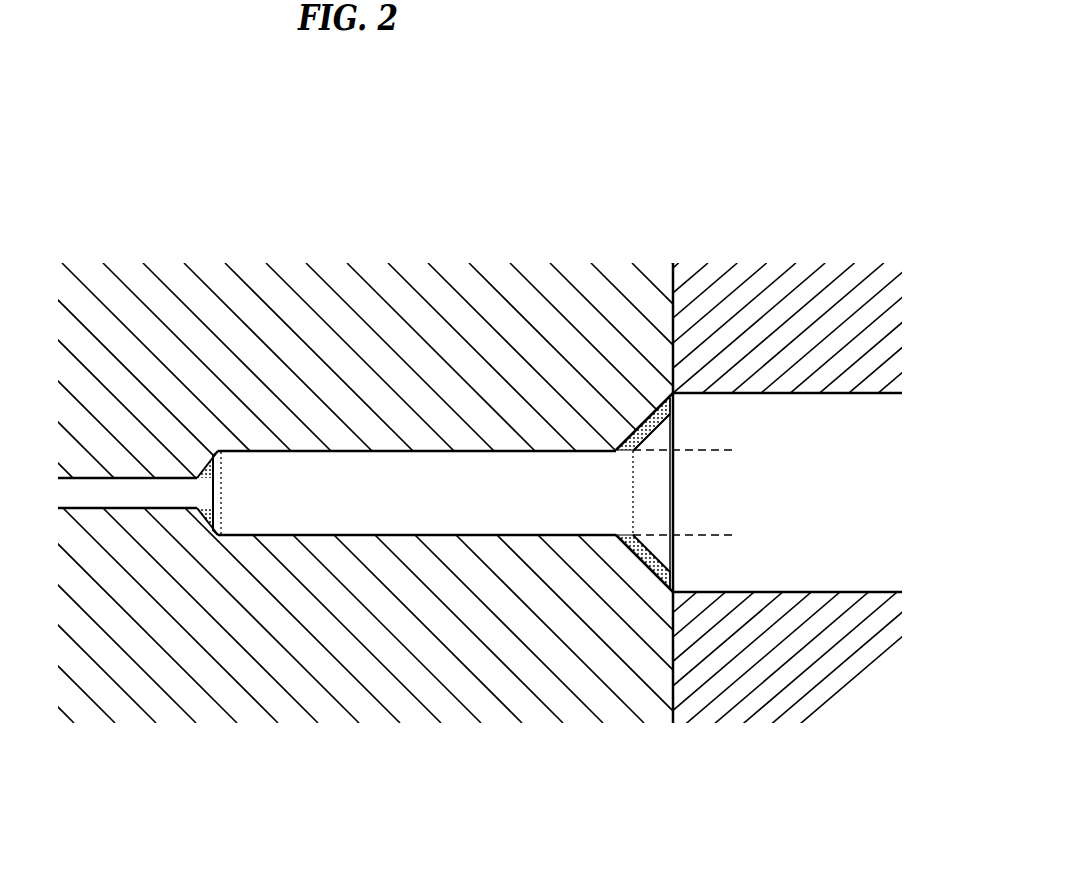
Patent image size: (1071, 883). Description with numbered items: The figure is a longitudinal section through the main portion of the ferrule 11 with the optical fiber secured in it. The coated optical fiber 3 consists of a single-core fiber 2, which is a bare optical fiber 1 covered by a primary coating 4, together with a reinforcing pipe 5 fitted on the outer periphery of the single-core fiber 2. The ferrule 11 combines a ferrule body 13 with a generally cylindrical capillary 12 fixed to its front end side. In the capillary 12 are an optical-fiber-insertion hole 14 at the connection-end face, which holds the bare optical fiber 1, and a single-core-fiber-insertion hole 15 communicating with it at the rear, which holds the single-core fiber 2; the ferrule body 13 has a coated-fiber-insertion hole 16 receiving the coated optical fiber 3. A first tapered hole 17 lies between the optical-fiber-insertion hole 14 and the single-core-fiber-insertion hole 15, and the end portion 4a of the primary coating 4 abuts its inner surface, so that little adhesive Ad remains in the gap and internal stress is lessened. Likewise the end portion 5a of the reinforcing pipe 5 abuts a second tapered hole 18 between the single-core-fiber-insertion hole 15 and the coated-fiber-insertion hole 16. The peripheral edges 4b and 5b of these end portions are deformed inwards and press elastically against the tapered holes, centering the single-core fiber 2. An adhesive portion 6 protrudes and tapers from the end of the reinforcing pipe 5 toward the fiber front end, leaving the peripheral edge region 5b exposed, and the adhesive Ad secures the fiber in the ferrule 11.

The bare optical fiber 1 is at (112, 492).
The single-core fiber 2 is at (483, 460).
The coated optical fiber 3 is at (832, 405).
The primary coating 4 is at (415, 450).
The end portion of the primary coating 4a is at (215, 507).
The peripheral edge of the end portion of the primary coating 4b is at (218, 453).
The reinforcing pipe 5 is at (737, 593).
The end portion of the reinforcing pipe 5a is at (670, 513).
The peripheral edge region of the end surface portion of the reinforcing pipe 5b is at (673, 593).
The adhesive portion 6 is at (653, 443).
The ferrule 11 is at (622, 162).
The capillary 12 is at (622, 282).
The ferrule body 13 is at (733, 277).
The optical-fiber-insertion hole 14 is at (73, 507).
The single-core-fiber-insertion hole 15 is at (427, 535).
The coated-fiber-insertion hole 16 is at (762, 593).
The first tapered hole 17 is at (212, 524).
The second tapered hole 18 is at (665, 419).
The adhesive Ad is at (207, 456).